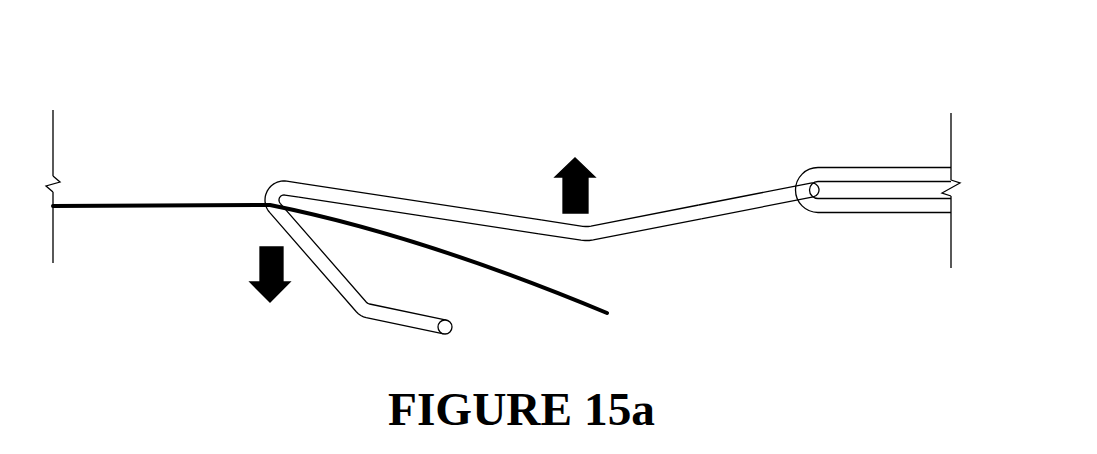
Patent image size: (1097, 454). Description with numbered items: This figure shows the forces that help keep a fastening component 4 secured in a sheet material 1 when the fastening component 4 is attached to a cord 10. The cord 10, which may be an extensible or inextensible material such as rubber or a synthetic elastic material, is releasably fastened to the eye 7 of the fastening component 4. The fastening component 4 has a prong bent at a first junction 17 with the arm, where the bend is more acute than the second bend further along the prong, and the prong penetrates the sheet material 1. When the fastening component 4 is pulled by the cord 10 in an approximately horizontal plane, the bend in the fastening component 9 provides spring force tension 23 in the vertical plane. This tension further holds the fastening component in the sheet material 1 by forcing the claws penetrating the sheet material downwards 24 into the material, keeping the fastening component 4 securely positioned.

The sheet material 1 is at (173, 201).
The first junction 17 is at (268, 193).
The downward force 24 is at (257, 272).
The fastening component 4 is at (818, 160).
The spring force tension 23 is at (588, 188).
The bend in the fastening component 9 is at (587, 243).
The cord 10 is at (883, 165).
The eye 7 is at (782, 208).